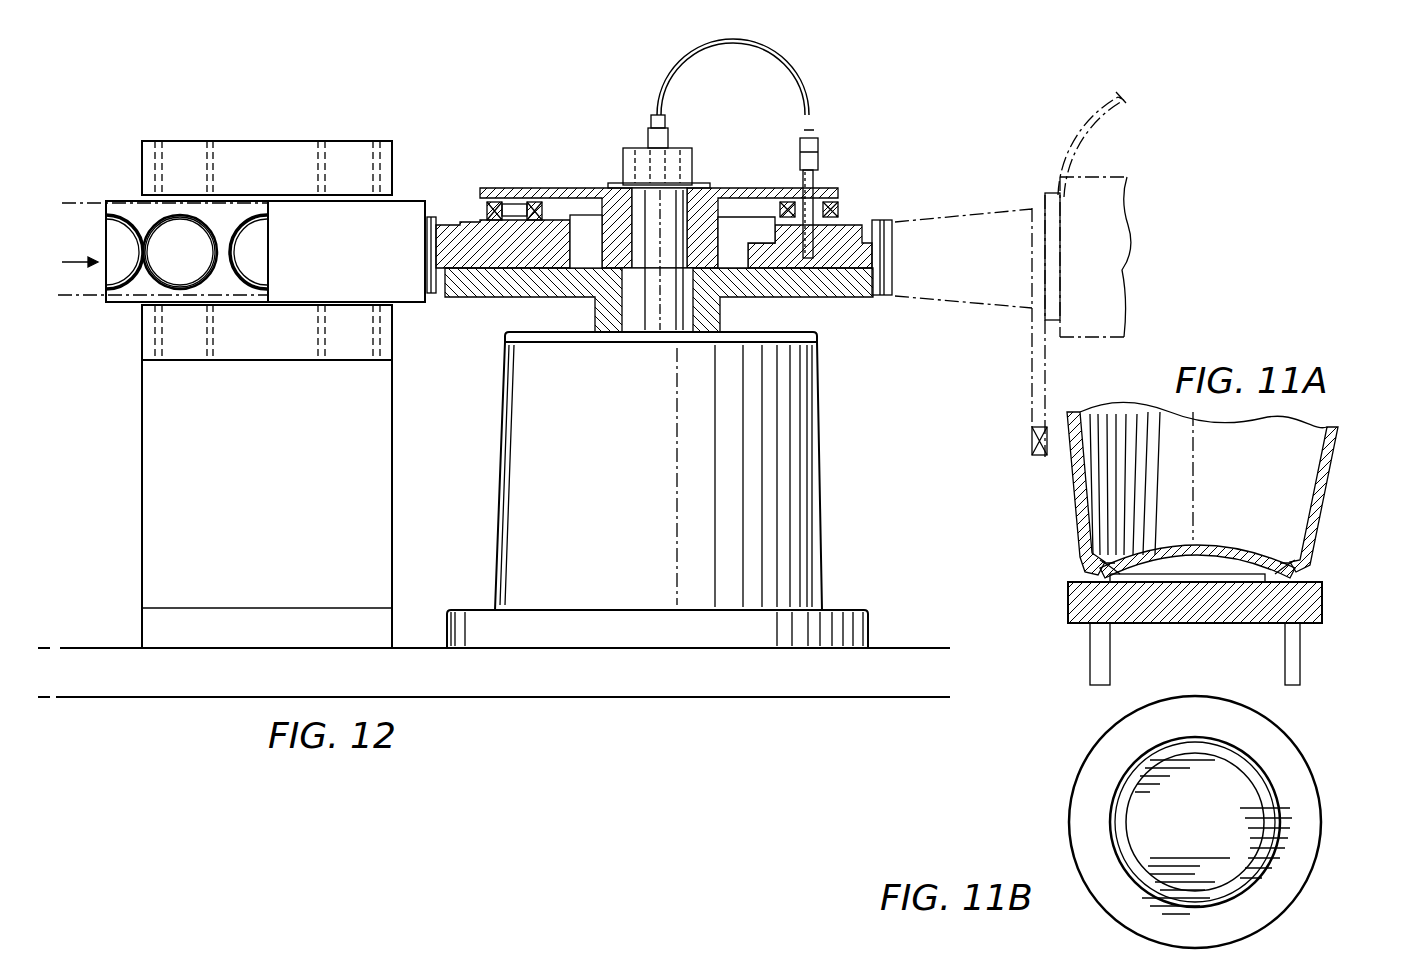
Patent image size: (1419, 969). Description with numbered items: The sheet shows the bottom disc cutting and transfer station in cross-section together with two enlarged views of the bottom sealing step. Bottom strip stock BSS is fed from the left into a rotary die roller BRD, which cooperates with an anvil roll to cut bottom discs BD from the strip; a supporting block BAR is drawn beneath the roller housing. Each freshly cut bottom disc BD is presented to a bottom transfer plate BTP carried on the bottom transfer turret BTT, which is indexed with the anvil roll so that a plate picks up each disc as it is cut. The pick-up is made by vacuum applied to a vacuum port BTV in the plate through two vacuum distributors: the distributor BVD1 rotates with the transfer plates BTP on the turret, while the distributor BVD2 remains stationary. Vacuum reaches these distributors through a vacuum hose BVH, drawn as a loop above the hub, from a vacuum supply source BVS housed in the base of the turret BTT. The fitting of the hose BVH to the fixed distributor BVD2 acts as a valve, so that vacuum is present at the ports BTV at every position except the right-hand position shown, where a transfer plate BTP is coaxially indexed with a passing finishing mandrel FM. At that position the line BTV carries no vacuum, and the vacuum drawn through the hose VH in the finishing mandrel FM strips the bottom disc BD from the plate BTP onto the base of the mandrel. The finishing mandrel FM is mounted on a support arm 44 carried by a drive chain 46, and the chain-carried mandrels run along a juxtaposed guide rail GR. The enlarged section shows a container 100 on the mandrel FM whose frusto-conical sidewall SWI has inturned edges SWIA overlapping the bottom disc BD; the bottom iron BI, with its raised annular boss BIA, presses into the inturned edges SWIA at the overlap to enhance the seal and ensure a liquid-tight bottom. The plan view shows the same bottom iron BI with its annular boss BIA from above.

In FIG. 12, the rotary die roller BRD is at (115, 200).
In FIG. 12, the bowl arm BAR is at (400, 215).
In FIG. 12, the bottom strip stock BSS is at (69, 252).
In FIG. 12, the bottom disc BD is at (427, 248).
In FIG. 11A, the bottom disc BD is at (1200, 547).
In FIG. 12, the bottom transfer plate BTP is at (438, 300).
In FIG. 12, the vacuum port BTV is at (478, 228).
In FIG. 12, the vacuum distributor BVD1 is at (535, 228).
In FIG. 12, the vacuum distributor BVD2 is at (602, 190).
In FIG. 12, the bottom transfer turret BTT is at (577, 109).
In FIG. 12, the vacuum hose BVH is at (793, 48).
In FIG. 12, the vacuum supply source BVS is at (657, 506).
In FIG. 12, the finishing mandrel FM is at (1000, 283).
In FIG. 11A, the finishing mandrel FM is at (1240, 487).
In FIG. 12, the guide rail GR is at (1050, 188).
In FIG. 12, the vacuum hose VH is at (1085, 138).
In FIG. 12, the support arm 44 is at (1030, 322).
In FIG. 12, the drive chain 46 is at (1032, 445).
In FIG. 11A, the container 100 is at (1062, 500).
In FIG. 11A, the sidewall SWI is at (1325, 490).
In FIG. 11A, the inturned edges SWIA is at (1110, 573).
In FIG. 11A, the raised annular boss BIA is at (1270, 590).
In FIG. 11B, the raised annular boss BIA is at (1115, 835).
In FIG. 11A, the bottom iron BI is at (1218, 605).
In FIG. 11B, the bottom iron BI is at (1212, 832).